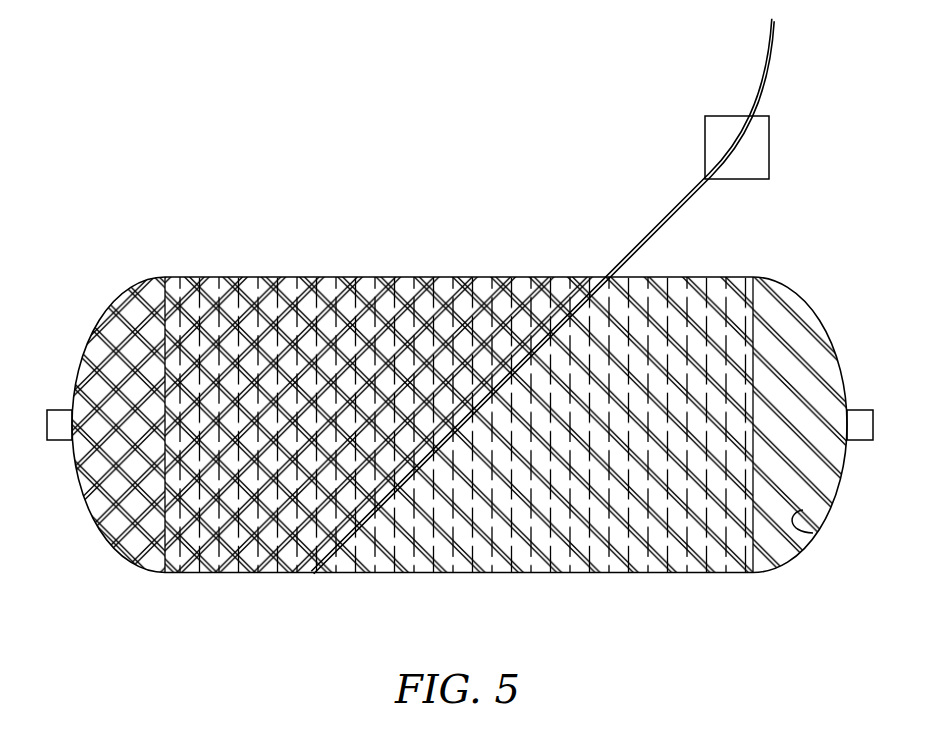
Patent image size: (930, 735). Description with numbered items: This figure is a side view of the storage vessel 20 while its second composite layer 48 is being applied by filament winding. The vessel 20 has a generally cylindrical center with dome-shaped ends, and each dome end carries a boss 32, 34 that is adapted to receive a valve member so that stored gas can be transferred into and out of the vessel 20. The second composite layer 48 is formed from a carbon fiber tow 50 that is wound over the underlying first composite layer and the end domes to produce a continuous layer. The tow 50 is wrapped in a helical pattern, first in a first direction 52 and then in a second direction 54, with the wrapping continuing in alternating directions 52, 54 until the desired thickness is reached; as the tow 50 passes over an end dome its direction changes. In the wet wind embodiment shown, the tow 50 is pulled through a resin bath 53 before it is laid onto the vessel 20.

The storage vessel 20 is at (157, 208).
The boss 32 is at (855, 410).
The boss 34 is at (65, 410).
The second composite layer 48 is at (133, 553).
The carbon fiber tow 50 is at (681, 206).
The first direction 52 is at (813, 533).
The resin bath 53 is at (769, 145).
The second direction 54 is at (93, 333).